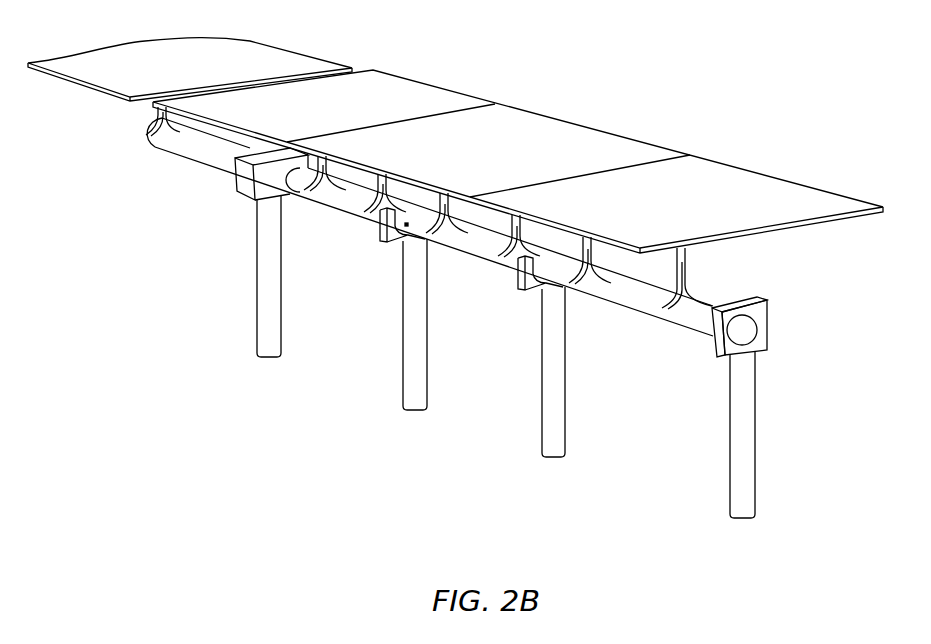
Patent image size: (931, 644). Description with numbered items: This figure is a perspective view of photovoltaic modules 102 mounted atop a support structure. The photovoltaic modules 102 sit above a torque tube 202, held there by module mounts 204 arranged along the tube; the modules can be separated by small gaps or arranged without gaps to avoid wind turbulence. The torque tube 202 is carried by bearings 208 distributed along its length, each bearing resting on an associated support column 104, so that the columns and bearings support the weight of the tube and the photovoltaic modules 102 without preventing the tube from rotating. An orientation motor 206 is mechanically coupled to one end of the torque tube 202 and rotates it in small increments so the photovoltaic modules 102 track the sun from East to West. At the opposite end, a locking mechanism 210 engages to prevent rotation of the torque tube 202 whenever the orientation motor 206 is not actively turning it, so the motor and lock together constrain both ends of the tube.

The photovoltaic module 102 is at (198, 69).
The support column 104 is at (283, 272).
The torque tube 202 is at (514, 273).
The module mount 204 is at (375, 190).
The orientation motor 206 is at (241, 200).
The bearing 208 is at (398, 243).
The locking mechanism 210 is at (769, 324).